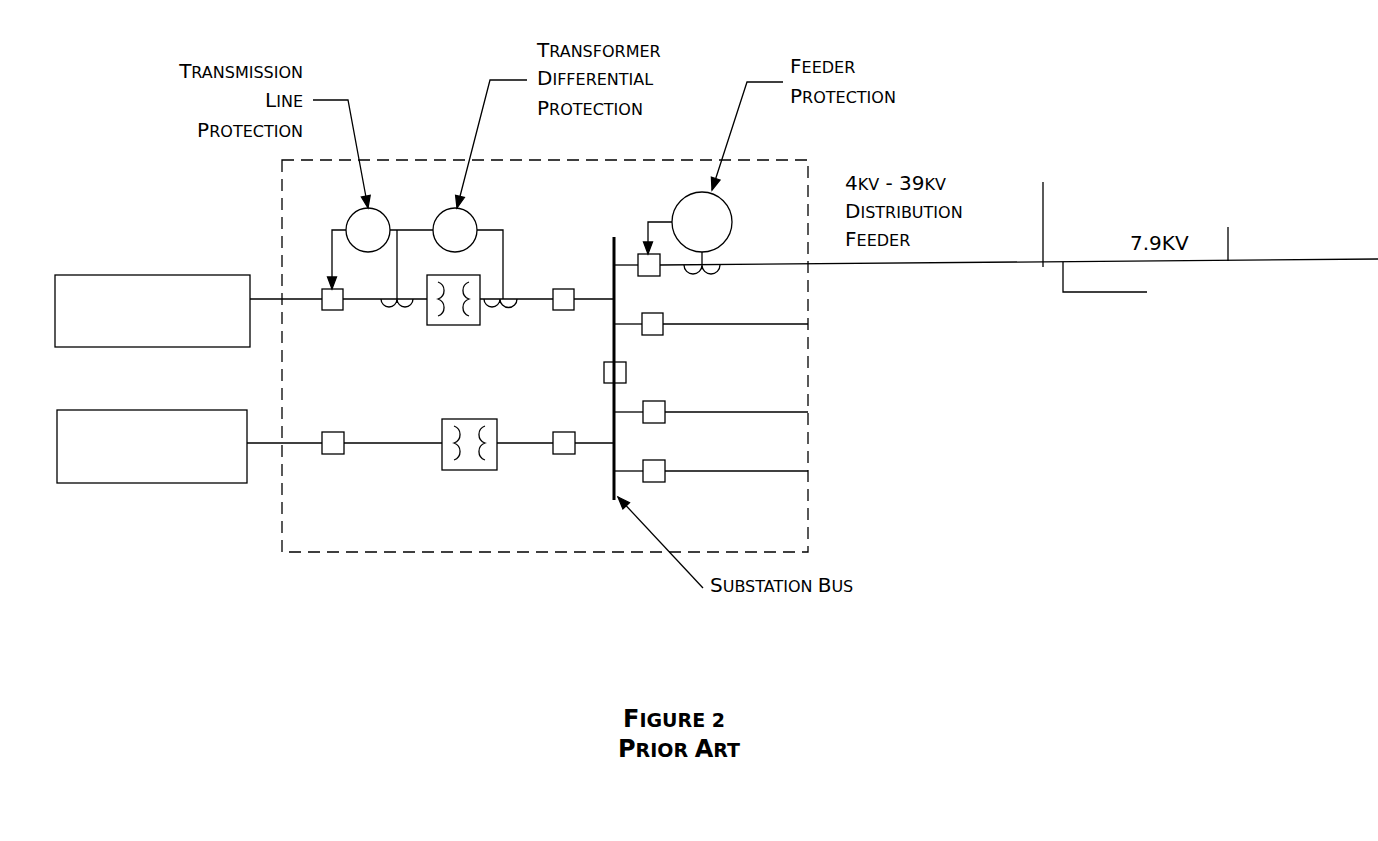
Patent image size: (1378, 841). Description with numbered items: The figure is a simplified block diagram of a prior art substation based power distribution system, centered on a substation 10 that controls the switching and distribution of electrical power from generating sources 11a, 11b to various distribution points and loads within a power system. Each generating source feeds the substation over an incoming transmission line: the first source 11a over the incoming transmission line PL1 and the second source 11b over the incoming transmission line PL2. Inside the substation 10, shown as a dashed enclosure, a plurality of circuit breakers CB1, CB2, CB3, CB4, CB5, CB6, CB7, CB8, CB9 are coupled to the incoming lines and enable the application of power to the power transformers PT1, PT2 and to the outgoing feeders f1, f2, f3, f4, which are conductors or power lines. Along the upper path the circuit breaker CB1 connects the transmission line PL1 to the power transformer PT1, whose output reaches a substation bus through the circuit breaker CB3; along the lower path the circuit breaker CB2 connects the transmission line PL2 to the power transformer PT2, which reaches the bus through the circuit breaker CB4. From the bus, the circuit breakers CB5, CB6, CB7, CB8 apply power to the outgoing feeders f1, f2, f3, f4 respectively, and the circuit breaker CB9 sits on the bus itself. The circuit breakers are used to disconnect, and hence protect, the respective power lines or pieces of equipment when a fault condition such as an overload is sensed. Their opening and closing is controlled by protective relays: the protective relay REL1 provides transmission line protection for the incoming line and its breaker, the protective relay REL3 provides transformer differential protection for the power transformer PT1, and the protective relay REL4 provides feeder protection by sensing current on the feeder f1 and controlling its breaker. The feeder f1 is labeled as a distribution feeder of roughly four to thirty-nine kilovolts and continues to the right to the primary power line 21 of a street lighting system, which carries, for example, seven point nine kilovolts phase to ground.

The substation 10 is at (470, 545).
The generating source 11a is at (156, 275).
The generating source 11b is at (155, 483).
The incoming transmission line PL1 is at (262, 299).
The incoming transmission line PL2 is at (263, 445).
The protective relay REL1 is at (349, 216).
The protective relay REL3 is at (472, 214).
The protective relay REL4 is at (688, 207).
The circuit breaker CB1 is at (333, 311).
The circuit breaker CB2 is at (345, 433).
The circuit breaker CB3 is at (566, 290).
The circuit breaker CB4 is at (567, 433).
The circuit breaker CB5 is at (655, 276).
The circuit breaker CB6 is at (664, 335).
The circuit breaker CB7 is at (658, 422).
The circuit breaker CB8 is at (658, 482).
The circuit breaker CB9 is at (626, 372).
The power transformer PT1 is at (482, 312).
The power transformer PT2 is at (497, 462).
The outgoing feeder f1 is at (790, 265).
The outgoing feeder f2 is at (790, 324).
The outgoing feeder f3 is at (797, 412).
The outgoing feeder f4 is at (792, 471).
The primary power line 21 is at (1228, 243).